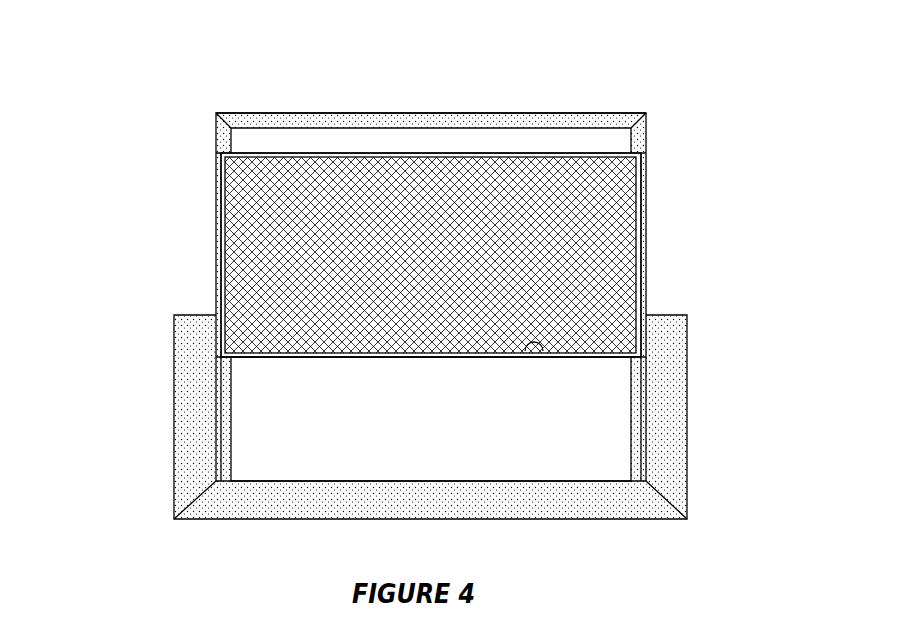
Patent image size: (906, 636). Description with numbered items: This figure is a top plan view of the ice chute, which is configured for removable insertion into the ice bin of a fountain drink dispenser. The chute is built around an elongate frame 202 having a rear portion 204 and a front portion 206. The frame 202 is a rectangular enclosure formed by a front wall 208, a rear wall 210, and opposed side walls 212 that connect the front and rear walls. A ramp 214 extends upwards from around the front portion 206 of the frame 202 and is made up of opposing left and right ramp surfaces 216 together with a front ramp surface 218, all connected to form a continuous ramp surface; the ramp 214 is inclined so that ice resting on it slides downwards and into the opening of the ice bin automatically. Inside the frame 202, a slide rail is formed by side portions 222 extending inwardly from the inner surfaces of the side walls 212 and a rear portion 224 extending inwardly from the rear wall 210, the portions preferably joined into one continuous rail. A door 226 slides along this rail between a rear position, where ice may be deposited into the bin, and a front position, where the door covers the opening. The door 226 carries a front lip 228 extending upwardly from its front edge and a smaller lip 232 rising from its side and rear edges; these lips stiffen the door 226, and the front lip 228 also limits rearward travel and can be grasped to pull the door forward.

The frame 202 is at (173, 60).
The rear portion 204 is at (140, 117).
The front portion 206 is at (140, 320).
The front wall 208 is at (512, 480).
The rear wall 210 is at (395, 113).
The side walls 212 is at (217, 190).
The ramp 214 is at (692, 312).
The left and right ramp surfaces 216 is at (200, 407).
The front ramp surface 218 is at (415, 493).
The side portions 222 is at (217, 137).
The rear portion 224 is at (530, 120).
The door 226 is at (406, 362).
The front lip 228 is at (543, 351).
The smaller lip 232 is at (232, 263).